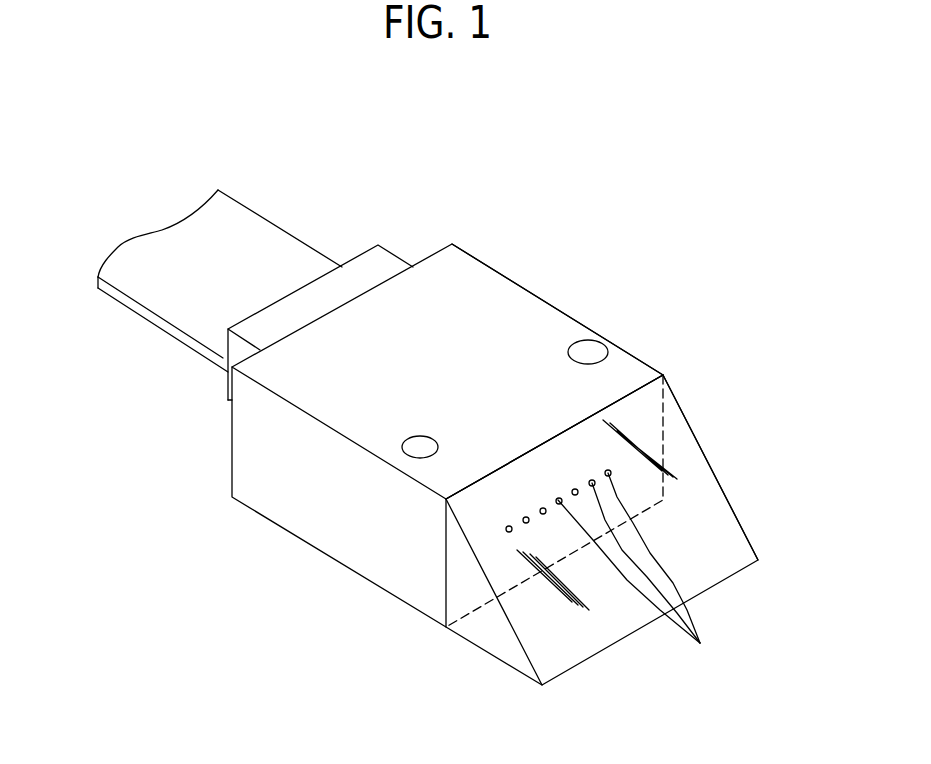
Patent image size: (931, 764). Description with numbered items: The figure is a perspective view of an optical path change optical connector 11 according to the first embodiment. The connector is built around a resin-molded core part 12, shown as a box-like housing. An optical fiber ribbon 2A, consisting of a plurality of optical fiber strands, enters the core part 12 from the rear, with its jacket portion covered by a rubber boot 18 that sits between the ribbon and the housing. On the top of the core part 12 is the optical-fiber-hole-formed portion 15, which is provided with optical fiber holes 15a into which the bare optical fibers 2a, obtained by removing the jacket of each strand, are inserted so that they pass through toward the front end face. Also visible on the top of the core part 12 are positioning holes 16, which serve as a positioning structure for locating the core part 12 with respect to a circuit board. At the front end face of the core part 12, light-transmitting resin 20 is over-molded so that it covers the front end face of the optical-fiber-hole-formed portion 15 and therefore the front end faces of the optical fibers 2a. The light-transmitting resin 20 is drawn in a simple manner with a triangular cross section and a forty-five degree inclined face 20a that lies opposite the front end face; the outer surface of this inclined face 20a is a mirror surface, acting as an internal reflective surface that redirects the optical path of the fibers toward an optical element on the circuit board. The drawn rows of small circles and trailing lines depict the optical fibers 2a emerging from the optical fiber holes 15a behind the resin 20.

The optical path change optical connector 11 is at (530, 247).
The optical fiber ribbon 2A is at (275, 242).
The rubber boot 18 is at (355, 275).
The core part 12 is at (523, 307).
The optical-fiber-hole-formed portion 15 is at (515, 415).
The positioning hole 16 is at (590, 348).
The light-transmitting resin 20 is at (715, 520).
The inclined face 20a is at (695, 487).
The optical fiber hole 15a is at (647, 575).
The optical fiber 2a is at (603, 556).